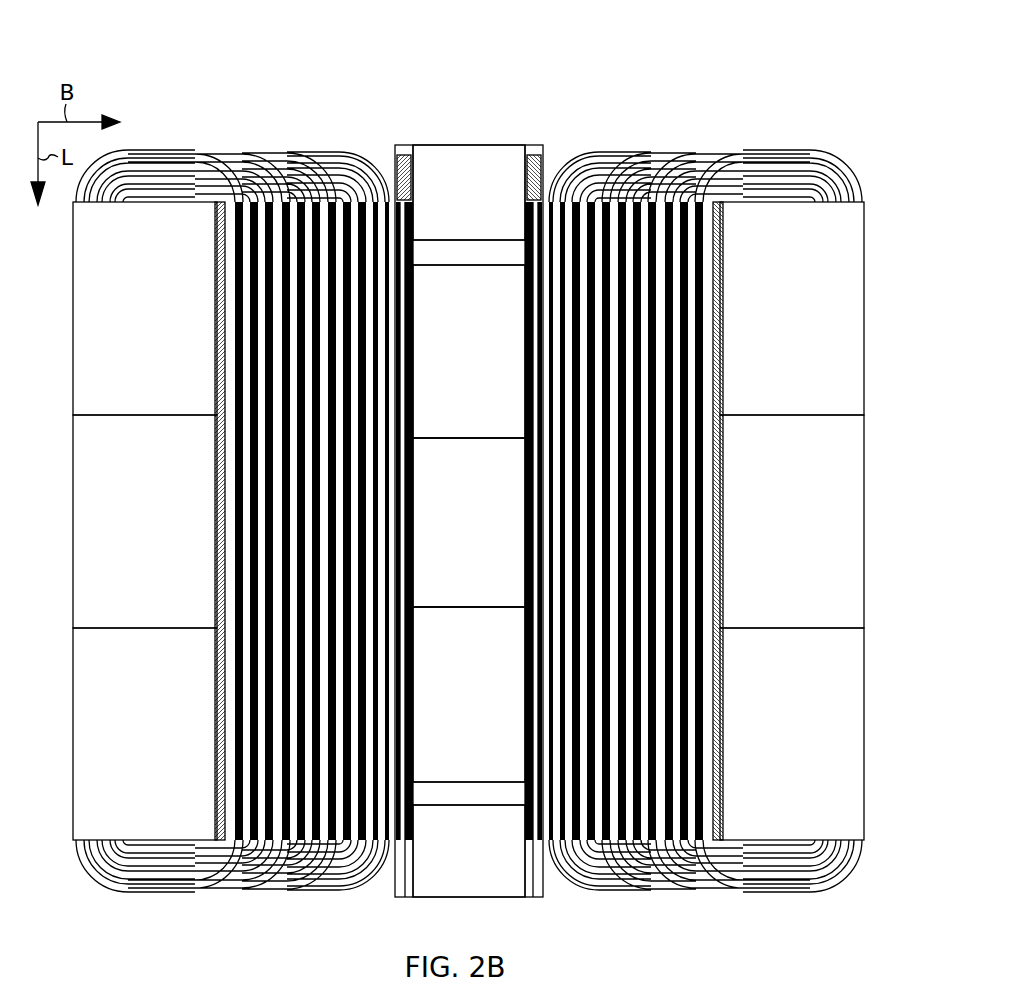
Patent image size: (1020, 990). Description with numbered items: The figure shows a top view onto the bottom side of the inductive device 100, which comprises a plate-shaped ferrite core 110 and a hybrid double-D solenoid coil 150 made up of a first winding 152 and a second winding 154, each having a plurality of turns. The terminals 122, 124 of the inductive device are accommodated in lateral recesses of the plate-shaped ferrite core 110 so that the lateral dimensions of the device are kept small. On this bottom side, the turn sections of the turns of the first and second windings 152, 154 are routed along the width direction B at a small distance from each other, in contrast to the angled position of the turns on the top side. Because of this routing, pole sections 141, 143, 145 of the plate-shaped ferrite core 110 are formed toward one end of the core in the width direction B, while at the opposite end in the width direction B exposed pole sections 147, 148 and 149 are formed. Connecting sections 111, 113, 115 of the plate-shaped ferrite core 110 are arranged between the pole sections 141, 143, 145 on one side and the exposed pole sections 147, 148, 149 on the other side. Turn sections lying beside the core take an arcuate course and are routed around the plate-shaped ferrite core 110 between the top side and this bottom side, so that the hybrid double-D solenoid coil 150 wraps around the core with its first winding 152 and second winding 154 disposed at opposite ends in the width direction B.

The inductive device 100 is at (176, 68).
The plate-shaped ferrite core 110 is at (435, 264).
The connecting section 111 is at (446, 356).
The connecting section 113 is at (446, 537).
The connecting section 115 is at (446, 710).
The terminal 122 is at (446, 214).
The terminal 124 is at (445, 863).
The pole section 141 is at (127, 323).
The pole section 143 is at (127, 536).
The pole section 145 is at (127, 751).
The exposed pole section 147 is at (769, 323).
The exposed pole section 148 is at (769, 536).
The exposed pole section 149 is at (769, 751).
The hybrid double-D solenoid coil 150 is at (737, 150).
The first winding 152 is at (193, 903).
The second winding 154 is at (739, 903).